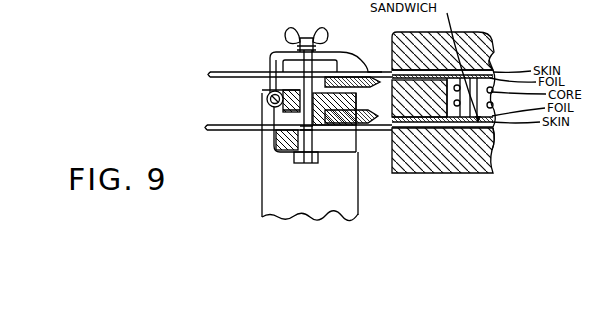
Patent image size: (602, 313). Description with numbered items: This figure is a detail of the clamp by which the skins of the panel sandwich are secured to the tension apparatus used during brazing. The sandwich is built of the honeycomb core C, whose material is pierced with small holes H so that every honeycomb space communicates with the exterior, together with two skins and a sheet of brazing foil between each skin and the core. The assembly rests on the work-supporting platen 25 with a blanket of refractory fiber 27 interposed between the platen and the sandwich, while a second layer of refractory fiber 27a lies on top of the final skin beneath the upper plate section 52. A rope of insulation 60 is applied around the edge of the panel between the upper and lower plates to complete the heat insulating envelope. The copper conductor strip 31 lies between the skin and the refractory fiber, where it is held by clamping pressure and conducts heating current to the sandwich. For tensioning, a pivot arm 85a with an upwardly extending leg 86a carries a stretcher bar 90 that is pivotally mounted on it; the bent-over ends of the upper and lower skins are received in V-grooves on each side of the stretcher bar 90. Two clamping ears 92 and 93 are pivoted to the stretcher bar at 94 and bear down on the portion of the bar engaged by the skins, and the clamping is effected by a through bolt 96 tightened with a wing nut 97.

The conductor strip 31 is at (224, 125).
The honeycomb core C is at (494, 160).
The small holes H is at (457, 106).
The upper plate section 52 is at (478, 32).
The second layer of refractory fiber 27a is at (493, 60).
The work-supporting platen 25 is at (451, 168).
The refractory fiber blanket 27 is at (493, 131).
The rope of insulation 60 is at (413, 82).
The clamping ear 92 is at (346, 51).
The wing nut 97 is at (290, 33).
The clamping ear 93 is at (352, 150).
The stretcher bar 90 is at (352, 97).
The upwardly extending leg 86a is at (265, 207).
The pivot arm 85a is at (256, 189).
The pivot 94 is at (267, 100).
The through bolt 96 is at (305, 132).